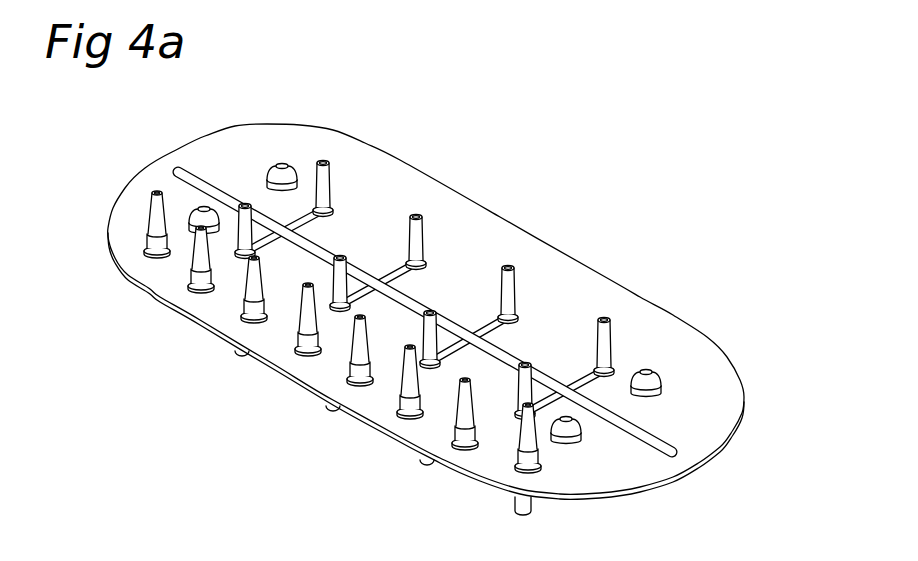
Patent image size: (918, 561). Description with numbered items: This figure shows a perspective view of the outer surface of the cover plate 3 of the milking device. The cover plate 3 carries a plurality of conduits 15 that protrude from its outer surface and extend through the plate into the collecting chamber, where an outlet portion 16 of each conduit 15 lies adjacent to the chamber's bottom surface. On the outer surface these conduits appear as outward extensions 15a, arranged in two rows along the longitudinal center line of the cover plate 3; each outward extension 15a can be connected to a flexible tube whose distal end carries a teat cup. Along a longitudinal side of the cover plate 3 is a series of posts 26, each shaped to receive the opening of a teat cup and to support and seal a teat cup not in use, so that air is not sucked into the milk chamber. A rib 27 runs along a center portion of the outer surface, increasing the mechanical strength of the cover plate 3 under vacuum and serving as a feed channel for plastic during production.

The cover plate 3 is at (455, 213).
The conduits 15 is at (442, 275).
The outward extensions 15a is at (418, 238).
The posts 26 is at (258, 312).
The rib 27 is at (660, 445).
The outlet portion 16 is at (514, 498).